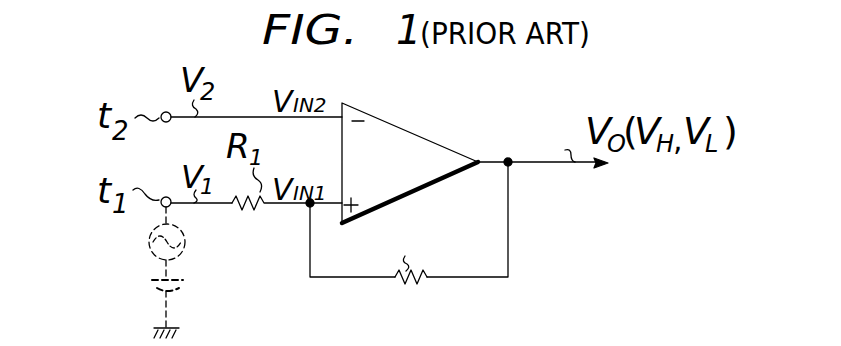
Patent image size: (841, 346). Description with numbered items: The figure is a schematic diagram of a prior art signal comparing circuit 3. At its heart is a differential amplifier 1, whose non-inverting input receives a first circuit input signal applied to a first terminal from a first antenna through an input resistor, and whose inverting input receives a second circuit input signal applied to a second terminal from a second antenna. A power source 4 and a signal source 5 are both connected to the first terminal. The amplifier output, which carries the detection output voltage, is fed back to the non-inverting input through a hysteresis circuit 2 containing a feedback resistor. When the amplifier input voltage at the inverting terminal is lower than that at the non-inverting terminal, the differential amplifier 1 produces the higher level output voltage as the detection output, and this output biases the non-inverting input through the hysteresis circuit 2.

The differential amplifier 1 is at (447, 182).
The hysteresis circuit 2 is at (508, 248).
The signal comparing circuit 3 is at (516, 134).
The power source 4 is at (183, 289).
The signal source 5 is at (185, 232).